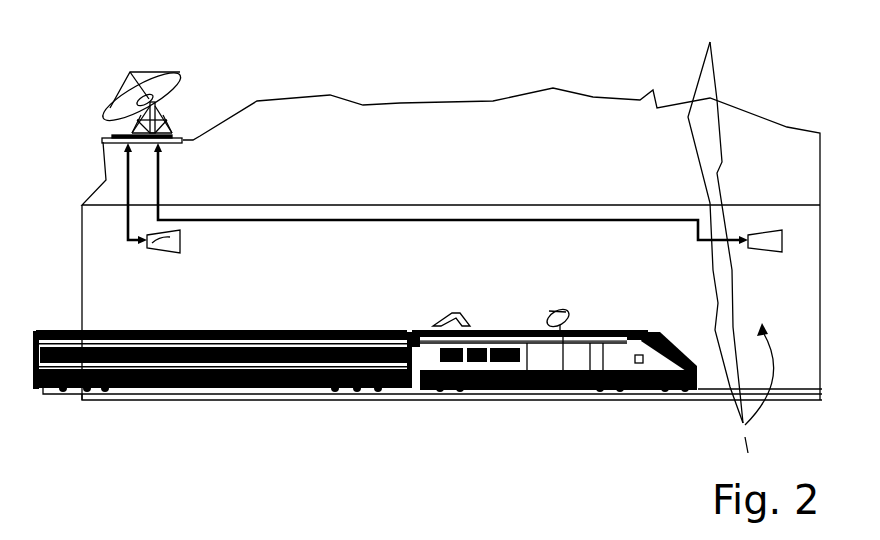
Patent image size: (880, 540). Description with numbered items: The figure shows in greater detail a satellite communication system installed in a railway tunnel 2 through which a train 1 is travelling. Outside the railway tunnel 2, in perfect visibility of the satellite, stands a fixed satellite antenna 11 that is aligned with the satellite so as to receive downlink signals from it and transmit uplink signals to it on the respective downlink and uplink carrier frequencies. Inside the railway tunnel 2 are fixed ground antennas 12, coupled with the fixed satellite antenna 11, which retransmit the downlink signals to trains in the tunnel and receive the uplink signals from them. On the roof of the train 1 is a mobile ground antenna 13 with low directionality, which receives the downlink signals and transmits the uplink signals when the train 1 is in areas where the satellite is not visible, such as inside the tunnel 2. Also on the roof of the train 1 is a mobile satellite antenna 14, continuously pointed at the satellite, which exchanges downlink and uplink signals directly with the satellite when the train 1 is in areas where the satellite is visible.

The train 1 is at (333, 390).
The railway tunnel 2 is at (731, 247).
The fixed satellite antenna 11 is at (168, 83).
The fixed ground antennas 12 is at (143, 245).
The mobile ground antenna 13 is at (522, 323).
The mobile satellite antenna 14 is at (551, 373).